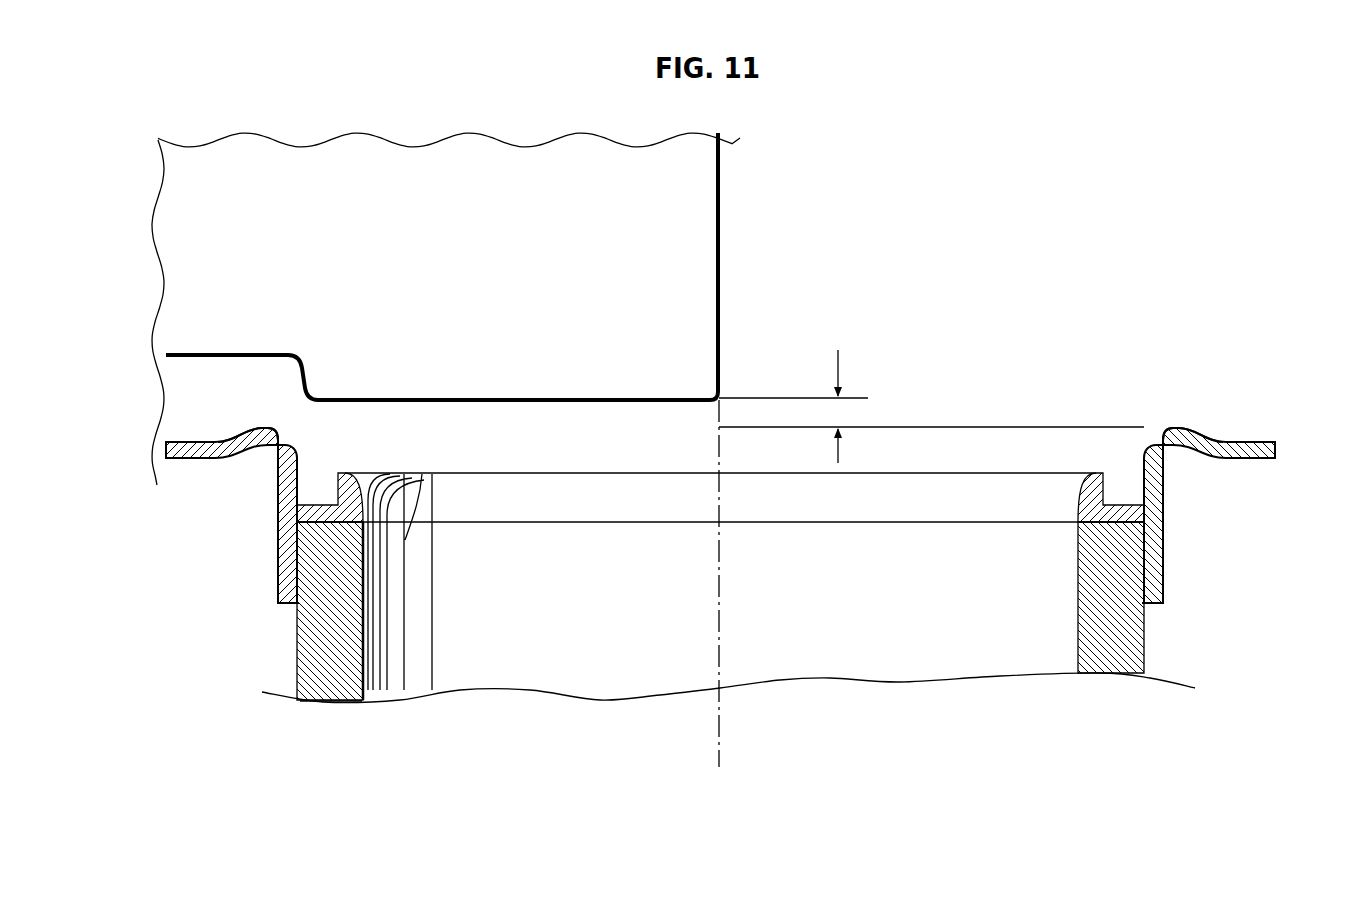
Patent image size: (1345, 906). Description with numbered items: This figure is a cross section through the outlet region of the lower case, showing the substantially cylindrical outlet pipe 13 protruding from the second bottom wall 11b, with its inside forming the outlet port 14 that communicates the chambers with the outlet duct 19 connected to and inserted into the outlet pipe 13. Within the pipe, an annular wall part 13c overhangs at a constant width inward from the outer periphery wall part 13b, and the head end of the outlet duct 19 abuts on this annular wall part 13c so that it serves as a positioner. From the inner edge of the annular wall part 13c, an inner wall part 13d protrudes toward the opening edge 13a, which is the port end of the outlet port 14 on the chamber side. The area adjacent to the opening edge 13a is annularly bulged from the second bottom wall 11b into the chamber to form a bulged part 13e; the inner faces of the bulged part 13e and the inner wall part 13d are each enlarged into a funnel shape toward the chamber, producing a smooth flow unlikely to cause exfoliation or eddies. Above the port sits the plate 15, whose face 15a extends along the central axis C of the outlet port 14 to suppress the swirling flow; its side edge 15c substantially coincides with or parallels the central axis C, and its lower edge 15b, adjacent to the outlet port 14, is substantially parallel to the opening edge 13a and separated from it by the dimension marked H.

The plate 15 is at (728, 164).
The face 15a is at (698, 215).
The lower edge 15b is at (503, 398).
The side edge 15c is at (720, 278).
The second bottom wall 11b is at (190, 455).
The outlet pipe 13 is at (286, 616).
The opening edge 13a is at (948, 426).
The outer periphery wall part 13b is at (290, 559).
The annular wall part 13c is at (343, 545).
The inner wall part 13d is at (378, 492).
The bulged part 13e is at (293, 430).
The outlet port 14 is at (625, 664).
The outlet duct 19 is at (323, 712).
The central axis C is at (722, 704).
The gap height H is at (794, 401).